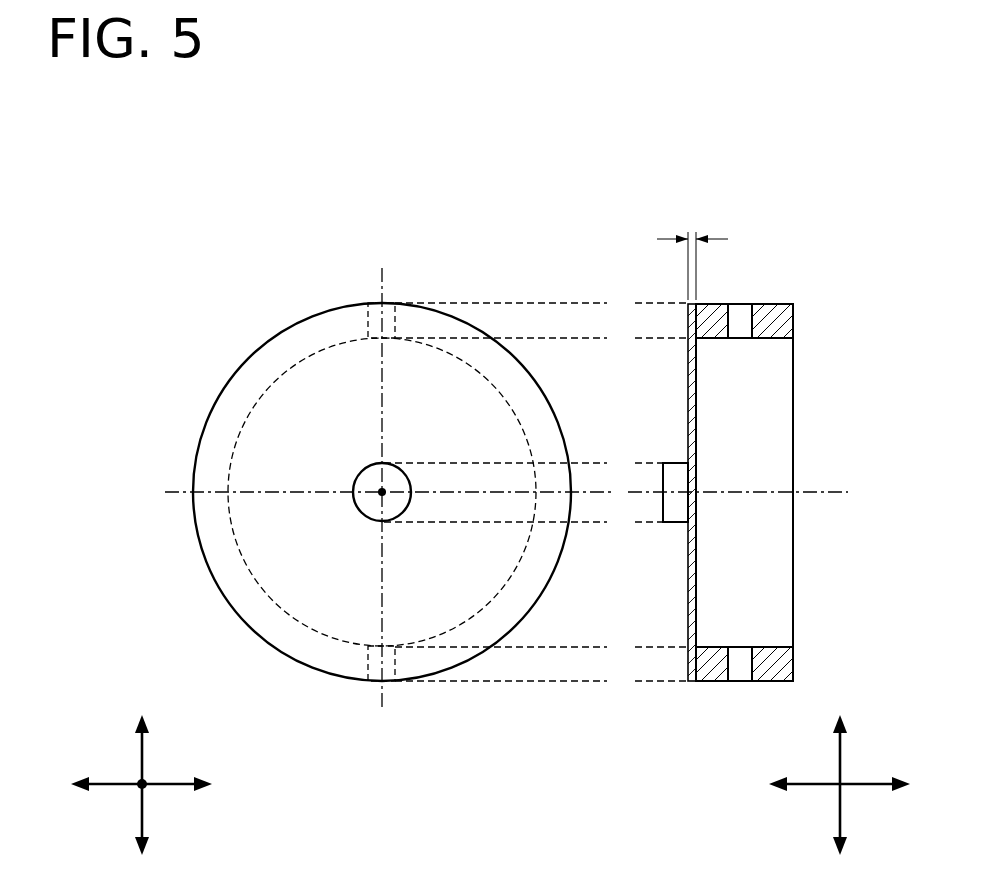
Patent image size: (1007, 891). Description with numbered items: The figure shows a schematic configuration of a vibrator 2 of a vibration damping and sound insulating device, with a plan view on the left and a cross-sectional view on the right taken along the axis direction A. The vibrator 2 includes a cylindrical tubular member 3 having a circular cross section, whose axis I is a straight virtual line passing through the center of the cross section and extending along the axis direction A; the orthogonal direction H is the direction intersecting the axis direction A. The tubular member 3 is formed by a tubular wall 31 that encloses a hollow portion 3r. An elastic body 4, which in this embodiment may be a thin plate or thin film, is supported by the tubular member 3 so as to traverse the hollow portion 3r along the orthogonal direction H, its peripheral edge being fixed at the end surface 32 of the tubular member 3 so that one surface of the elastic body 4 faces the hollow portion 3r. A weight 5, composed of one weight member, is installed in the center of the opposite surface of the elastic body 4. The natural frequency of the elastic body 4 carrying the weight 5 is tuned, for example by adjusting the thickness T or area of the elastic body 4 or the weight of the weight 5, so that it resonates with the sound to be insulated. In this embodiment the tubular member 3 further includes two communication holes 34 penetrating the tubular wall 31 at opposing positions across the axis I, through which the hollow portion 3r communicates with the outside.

The vibrator 2 is at (158, 292).
The tubular member 3 is at (255, 352).
The tubular wall 31 is at (773, 304).
The end surface 32 is at (793, 322).
The hollow portion 3r is at (773, 546).
The communication hole 34 is at (378, 302).
The elastic body 4 is at (280, 425).
The weight 5 is at (370, 516).
The axis I is at (378, 512).
The thickness T is at (692, 249).
The orthogonal direction H is at (142, 752).
The axis direction A is at (145, 787).